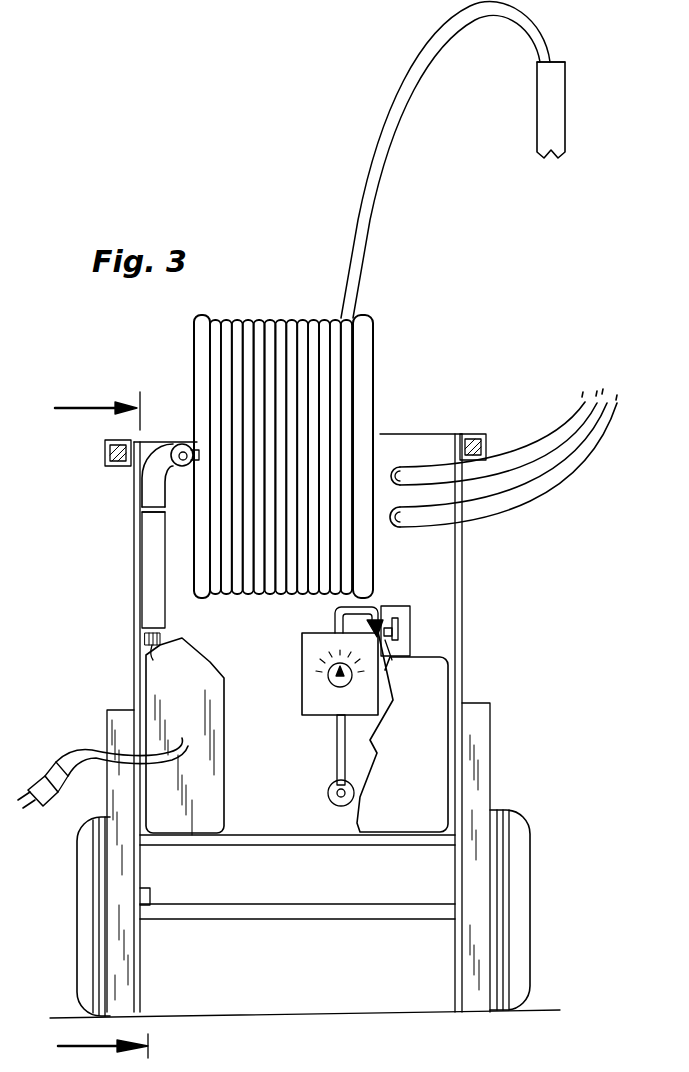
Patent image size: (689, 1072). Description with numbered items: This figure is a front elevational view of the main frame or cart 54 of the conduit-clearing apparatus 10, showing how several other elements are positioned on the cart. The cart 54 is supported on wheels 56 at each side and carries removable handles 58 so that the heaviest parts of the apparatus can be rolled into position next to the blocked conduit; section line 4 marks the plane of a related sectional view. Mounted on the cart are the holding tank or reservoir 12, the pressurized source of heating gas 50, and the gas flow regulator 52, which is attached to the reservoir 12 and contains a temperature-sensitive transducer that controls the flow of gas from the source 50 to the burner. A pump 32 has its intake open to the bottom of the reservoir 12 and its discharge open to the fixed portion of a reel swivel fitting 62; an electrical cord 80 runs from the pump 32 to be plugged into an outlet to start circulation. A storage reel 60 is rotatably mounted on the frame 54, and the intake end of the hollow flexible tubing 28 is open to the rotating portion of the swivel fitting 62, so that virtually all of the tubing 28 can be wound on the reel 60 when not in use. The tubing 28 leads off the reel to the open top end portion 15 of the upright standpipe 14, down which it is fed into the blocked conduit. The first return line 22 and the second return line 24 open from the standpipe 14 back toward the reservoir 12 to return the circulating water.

The section line 4- 4 is at (83, 728).
The apparatus 10 is at (100, 521).
The holding tank or reservoir 12 is at (440, 594).
The standpipe 14 is at (550, 112).
The top end portion 15 is at (548, 72).
The first hollow return line 22 is at (592, 452).
The second hollow return line 24 is at (570, 430).
The flexible tubing 28 is at (397, 70).
The pump 32 is at (158, 674).
The source of heating gas under pressure 50 is at (428, 680).
The gas flow regulator 52 is at (303, 645).
The main frame or cart 54 is at (134, 578).
The wheels 56 is at (522, 914).
The removable handles 58 is at (468, 433).
The storage reel 60 is at (207, 352).
The reel swivel fitting 62 is at (165, 478).
The electrical cord 80 is at (78, 750).